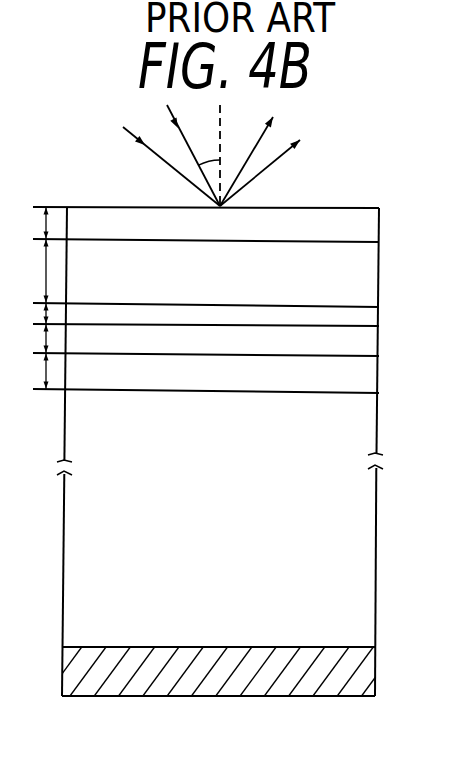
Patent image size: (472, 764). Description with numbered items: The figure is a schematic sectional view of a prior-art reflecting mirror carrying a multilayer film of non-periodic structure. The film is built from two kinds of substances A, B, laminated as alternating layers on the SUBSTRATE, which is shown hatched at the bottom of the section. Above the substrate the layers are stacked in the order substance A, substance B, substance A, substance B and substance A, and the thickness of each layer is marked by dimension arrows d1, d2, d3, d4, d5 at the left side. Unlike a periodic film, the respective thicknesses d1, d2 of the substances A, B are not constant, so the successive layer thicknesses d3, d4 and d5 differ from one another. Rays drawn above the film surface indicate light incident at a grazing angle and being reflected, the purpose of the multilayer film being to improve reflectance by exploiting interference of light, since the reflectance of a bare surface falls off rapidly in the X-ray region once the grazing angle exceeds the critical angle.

The substance A is at (95, 315).
The substance B is at (206, 309).
The thickness of substance A layer d1 is at (24, 223).
The thickness of substance B layer d2 is at (24, 271).
The thickness of third layer d3 is at (24, 316).
The thickness of fourth layer d4 is at (24, 339).
The thickness of fifth layer d5 is at (24, 371).
The substrate SUBSTRATE is at (320, 683).